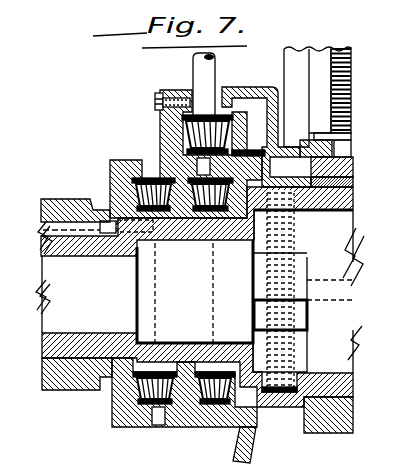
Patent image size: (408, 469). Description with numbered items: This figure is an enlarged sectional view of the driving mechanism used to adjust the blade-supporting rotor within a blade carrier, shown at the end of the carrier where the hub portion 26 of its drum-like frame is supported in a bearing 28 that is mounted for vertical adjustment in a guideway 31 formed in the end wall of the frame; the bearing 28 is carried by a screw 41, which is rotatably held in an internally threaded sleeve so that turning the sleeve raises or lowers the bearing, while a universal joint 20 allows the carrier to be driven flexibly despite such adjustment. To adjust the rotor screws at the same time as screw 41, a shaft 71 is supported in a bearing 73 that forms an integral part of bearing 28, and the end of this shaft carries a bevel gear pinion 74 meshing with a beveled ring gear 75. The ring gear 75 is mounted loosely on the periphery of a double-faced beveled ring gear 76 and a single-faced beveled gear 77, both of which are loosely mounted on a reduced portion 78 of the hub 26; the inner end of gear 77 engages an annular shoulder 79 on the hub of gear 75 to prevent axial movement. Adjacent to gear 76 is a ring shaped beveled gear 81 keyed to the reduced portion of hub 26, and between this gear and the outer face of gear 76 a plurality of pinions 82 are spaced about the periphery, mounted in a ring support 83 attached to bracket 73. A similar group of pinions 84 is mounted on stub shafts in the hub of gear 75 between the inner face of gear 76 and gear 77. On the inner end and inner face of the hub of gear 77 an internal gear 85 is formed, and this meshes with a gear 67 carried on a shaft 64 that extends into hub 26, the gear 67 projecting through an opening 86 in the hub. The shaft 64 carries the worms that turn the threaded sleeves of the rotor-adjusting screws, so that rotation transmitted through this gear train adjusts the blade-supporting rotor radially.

The universal joint 20 is at (63, 199).
The hub portion 26 is at (322, 197).
The bearing 28 is at (347, 433).
The guideway 31 is at (285, 48).
The screw 41 is at (337, 70).
The shaft 64 is at (353, 264).
The gear 67 is at (307, 259).
The shaft 71 is at (193, 68).
The bearing 73 is at (234, 87).
The bevel gear pinion 74 is at (178, 125).
The beveled ring gear 75 is at (243, 122).
The double-faced beveled ring gear 76 is at (172, 238).
The single-faced beveled gear 77 is at (238, 222).
The reduced portion 78 is at (172, 370).
The annular shoulder 79 is at (262, 151).
The ring shaped beveled gear 81 is at (108, 178).
The pinions 82 is at (147, 212).
The ring support 83 is at (128, 157).
The pinions 84 is at (182, 213).
The internal gear 85 is at (297, 339).
The opening 86 is at (309, 304).